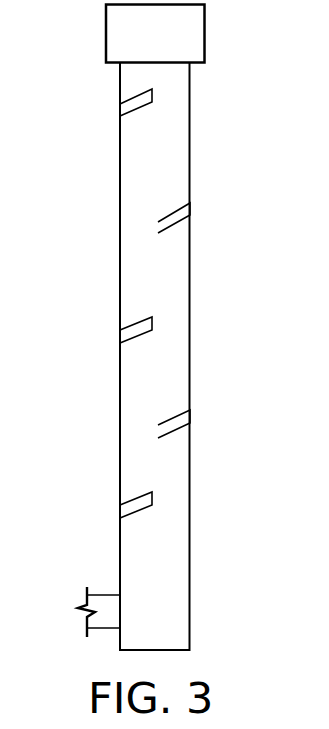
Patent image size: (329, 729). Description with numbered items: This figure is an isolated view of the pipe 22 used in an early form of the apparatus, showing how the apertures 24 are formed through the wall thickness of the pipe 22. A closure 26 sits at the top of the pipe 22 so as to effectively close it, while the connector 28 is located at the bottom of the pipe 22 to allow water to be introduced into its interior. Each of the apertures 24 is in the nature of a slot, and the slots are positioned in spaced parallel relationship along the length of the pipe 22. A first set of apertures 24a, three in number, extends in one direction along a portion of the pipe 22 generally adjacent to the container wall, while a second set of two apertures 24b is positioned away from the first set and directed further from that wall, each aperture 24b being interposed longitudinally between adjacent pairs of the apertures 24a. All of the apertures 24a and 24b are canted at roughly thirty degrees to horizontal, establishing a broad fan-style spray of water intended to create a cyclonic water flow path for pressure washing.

The pipe 22 is at (190, 365).
The apertures 24 is at (154, 318).
The first set of apertures 24a is at (135, 112).
The second set of apertures 24b is at (176, 227).
The closure 26 is at (205, 33).
The connector 28 is at (100, 594).